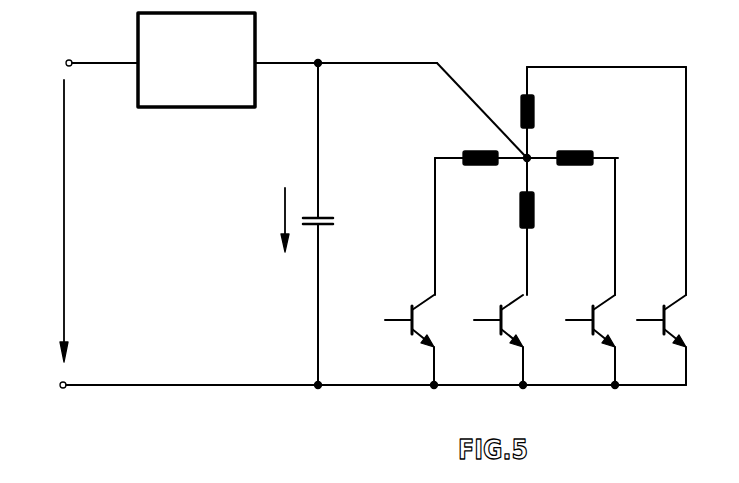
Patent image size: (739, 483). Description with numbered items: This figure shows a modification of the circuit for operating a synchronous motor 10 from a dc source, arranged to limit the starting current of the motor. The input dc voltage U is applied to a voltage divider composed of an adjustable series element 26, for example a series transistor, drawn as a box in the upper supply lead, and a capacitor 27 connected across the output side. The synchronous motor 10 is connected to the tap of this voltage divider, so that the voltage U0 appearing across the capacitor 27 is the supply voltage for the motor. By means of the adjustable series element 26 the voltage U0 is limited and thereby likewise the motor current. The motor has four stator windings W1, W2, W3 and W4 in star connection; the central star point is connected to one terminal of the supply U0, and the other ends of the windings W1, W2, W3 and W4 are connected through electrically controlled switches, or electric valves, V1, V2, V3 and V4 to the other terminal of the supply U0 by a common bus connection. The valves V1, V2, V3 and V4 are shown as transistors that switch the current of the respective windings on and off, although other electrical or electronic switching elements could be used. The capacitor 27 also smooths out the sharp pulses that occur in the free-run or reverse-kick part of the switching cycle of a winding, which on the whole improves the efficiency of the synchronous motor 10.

The synchronous motor 10 is at (606, 52).
The series element 26 is at (198, 108).
The capacitor 27 is at (332, 212).
The stator winding W1 is at (481, 166).
The stator winding W2 is at (536, 209).
The stator winding W3 is at (578, 150).
The stator winding W4 is at (519, 100).
The electrically controlled switch V1 is at (420, 328).
The electrically controlled switch V2 is at (509, 328).
The electrically controlled switch V3 is at (601, 328).
The electrically controlled switch V4 is at (672, 328).
The dc source voltage U is at (72, 221).
The dc voltage supply U0 is at (285, 236).